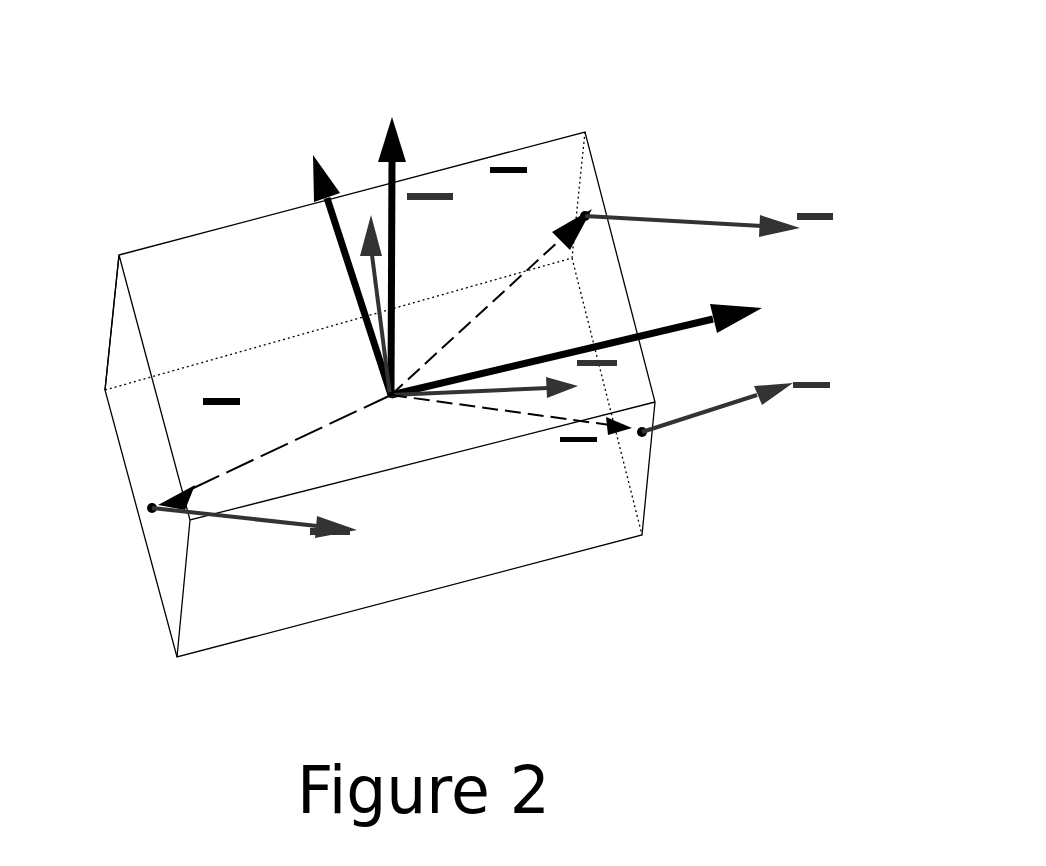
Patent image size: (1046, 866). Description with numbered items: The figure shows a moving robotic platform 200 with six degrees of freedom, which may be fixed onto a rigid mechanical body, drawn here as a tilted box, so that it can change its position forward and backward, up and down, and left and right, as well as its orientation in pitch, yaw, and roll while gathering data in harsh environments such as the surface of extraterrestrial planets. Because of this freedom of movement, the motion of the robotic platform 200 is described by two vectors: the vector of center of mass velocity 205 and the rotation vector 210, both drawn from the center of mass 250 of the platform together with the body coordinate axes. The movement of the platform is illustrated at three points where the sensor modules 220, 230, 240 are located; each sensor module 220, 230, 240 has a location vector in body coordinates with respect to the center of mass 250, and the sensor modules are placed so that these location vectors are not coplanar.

The moving robotic platform 200 is at (627, 63).
The vector of center of mass velocity 205 is at (532, 402).
The rotation vector 210 is at (337, 237).
The sensor module 220 is at (648, 437).
The sensor module 230 is at (593, 207).
The sensor module 240 is at (150, 508).
The center of mass 250 is at (388, 393).